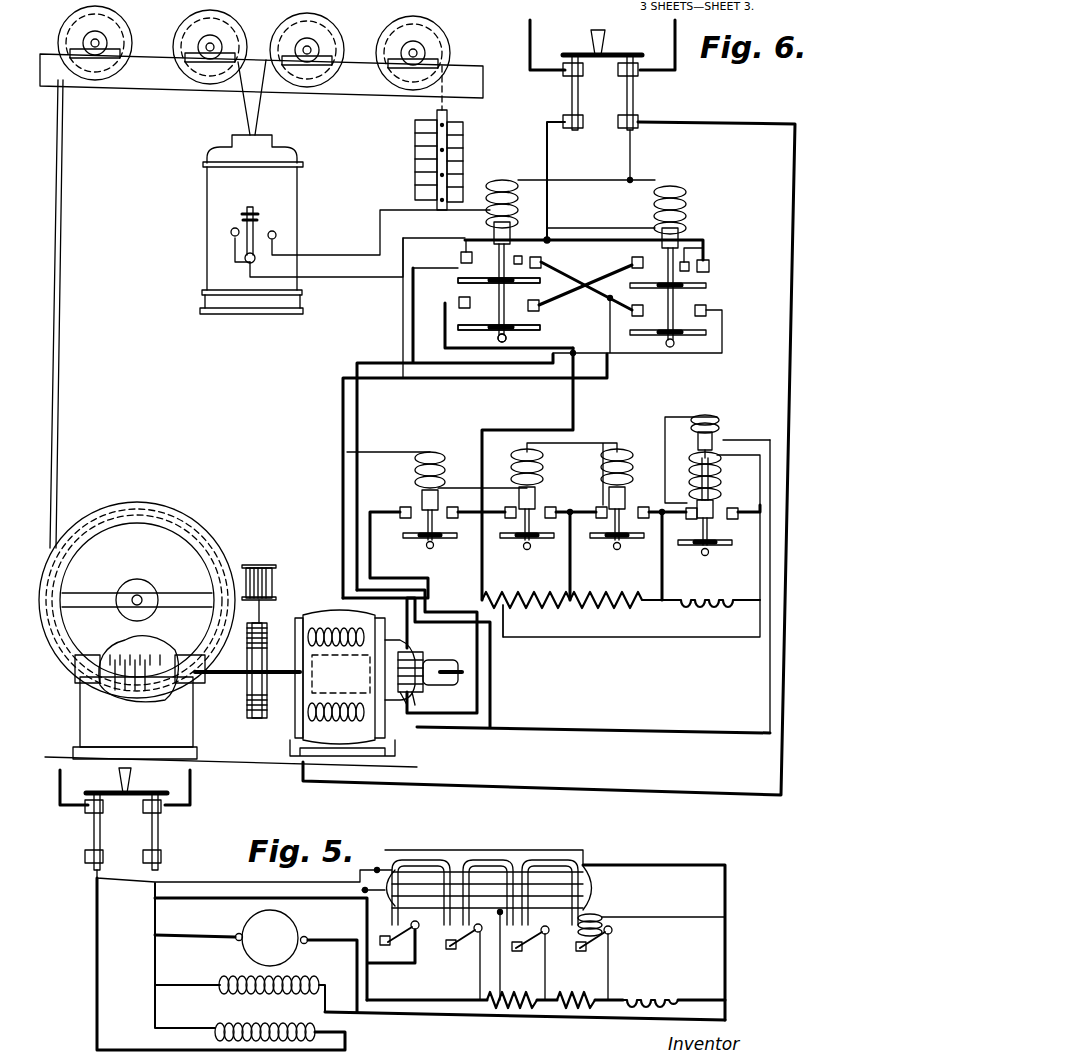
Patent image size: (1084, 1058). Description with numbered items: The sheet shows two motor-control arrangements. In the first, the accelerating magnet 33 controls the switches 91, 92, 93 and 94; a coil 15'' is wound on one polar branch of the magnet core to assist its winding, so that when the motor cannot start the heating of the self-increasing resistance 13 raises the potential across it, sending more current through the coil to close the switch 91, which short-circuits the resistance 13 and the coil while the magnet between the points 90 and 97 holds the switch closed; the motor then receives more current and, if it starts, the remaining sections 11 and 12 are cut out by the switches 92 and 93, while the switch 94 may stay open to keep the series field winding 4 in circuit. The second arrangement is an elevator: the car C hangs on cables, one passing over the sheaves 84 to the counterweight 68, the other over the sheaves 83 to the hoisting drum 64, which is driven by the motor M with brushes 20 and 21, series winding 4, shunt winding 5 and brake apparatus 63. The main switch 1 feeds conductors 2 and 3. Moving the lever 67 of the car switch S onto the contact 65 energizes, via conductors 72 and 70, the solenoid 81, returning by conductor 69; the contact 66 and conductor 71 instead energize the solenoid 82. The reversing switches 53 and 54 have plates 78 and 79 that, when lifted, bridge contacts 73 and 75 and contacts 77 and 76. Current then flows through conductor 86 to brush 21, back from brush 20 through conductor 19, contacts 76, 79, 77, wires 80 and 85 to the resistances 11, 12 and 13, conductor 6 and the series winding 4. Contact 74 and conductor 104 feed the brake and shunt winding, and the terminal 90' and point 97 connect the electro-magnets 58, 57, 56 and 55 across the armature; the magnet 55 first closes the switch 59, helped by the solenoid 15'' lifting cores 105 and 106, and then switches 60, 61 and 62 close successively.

In FIG. 6, the sheaves 83 is at (122, 38).
In FIG. 6, the sheaves 84 is at (335, 38).
In FIG. 6, the counterweight 68 is at (428, 136).
In FIG. 6, the elevator car C is at (280, 188).
In FIG. 6, the switch lever 67 is at (268, 191).
In FIG. 6, the car switch S is at (240, 220).
In FIG. 6, the contact 65 is at (280, 228).
In FIG. 6, the contact 66 is at (233, 236).
In FIG. 6, the conductor 70 is at (400, 210).
In FIG. 6, the conductor 71 is at (355, 255).
In FIG. 6, the conductor 72 is at (372, 280).
In FIG. 6, the main line two-pole switch 1 is at (590, 88).
In FIG. 6, the conductor 2 is at (547, 140).
In FIG. 6, the conductor 3 is at (705, 124).
In FIG. 6, the conductor 69 is at (628, 158).
In FIG. 6, the solenoid 81 is at (486, 184).
In FIG. 6, the solenoid 82 is at (687, 210).
In FIG. 6, the reversing switch 53 is at (455, 288).
In FIG. 6, the reversing switch 54 is at (708, 283).
In FIG. 6, the contact 73 is at (461, 258).
In FIG. 6, the contact 74 is at (518, 266).
In FIG. 6, the contact 75 is at (542, 263).
In FIG. 6, the contact 76 is at (534, 311).
In FIG. 6, the contact 77 is at (470, 303).
In FIG. 6, the contact plate 78 is at (462, 280).
In FIG. 6, the contact plate 79 is at (486, 330).
In FIG. 6, the wire 80 is at (540, 350).
In FIG. 6, the conductor 19 is at (466, 368).
In FIG. 6, the conductor 86 is at (562, 370).
In FIG. 6, the conductor 85 is at (575, 392).
In FIG. 6, the conductor 104 is at (340, 420).
In FIG. 6, the terminal 90' is at (383, 582).
In FIG. 6, the electro-magnet 58 is at (440, 462).
In FIG. 6, the electro-magnet 57 is at (540, 466).
In FIG. 6, the electro-magnet 56 is at (634, 479).
In FIG. 6, the magnet 55 is at (720, 485).
In FIG. 6, the coil 15'' is at (717, 455).
In FIG. 5, the coil 15'' is at (651, 911).
In FIG. 6, the core 105 is at (697, 445).
In FIG. 6, the core 106 is at (698, 490).
In FIG. 6, the switch 62 is at (416, 510).
In FIG. 6, the switch 61 is at (514, 510).
In FIG. 6, the switch 60 is at (608, 510).
In FIG. 6, the switch 59 is at (718, 520).
In FIG. 6, the resistance 11 is at (548, 606).
In FIG. 5, the resistance 11 is at (520, 1010).
In FIG. 6, the resistance 12 is at (588, 606).
In FIG. 5, the resistance 12 is at (575, 1010).
In FIG. 6, the self-increasing resistance 13 is at (692, 606).
In FIG. 5, the self-increasing resistance 13 is at (630, 1010).
In FIG. 6, the point 97 is at (505, 612).
In FIG. 5, the point 97 is at (500, 990).
In FIG. 6, the conductor 6 is at (552, 727).
In FIG. 6, the hoisting drum 64 is at (148, 505).
In FIG. 6, the electro-magnetic brake apparatus 63 is at (275, 600).
In FIG. 6, the electric motor M is at (262, 612).
In FIG. 6, the shunt field winding 5 is at (335, 625).
In FIG. 5, the shunt field winding 5 is at (248, 1030).
In FIG. 6, the series field winding 4 is at (305, 722).
In FIG. 5, the series field winding 4 is at (305, 983).
In FIG. 6, the brush 20 is at (412, 655).
In FIG. 6, the brush 21 is at (420, 700).
In FIG. 5, the point 90 is at (213, 909).
In FIG. 5, the accelerating magnet 33 is at (583, 858).
In FIG. 5, the switch 94 is at (399, 942).
In FIG. 5, the switch 93 is at (440, 945).
In FIG. 5, the switch 92 is at (512, 945).
In FIG. 5, the switch 91 is at (578, 945).